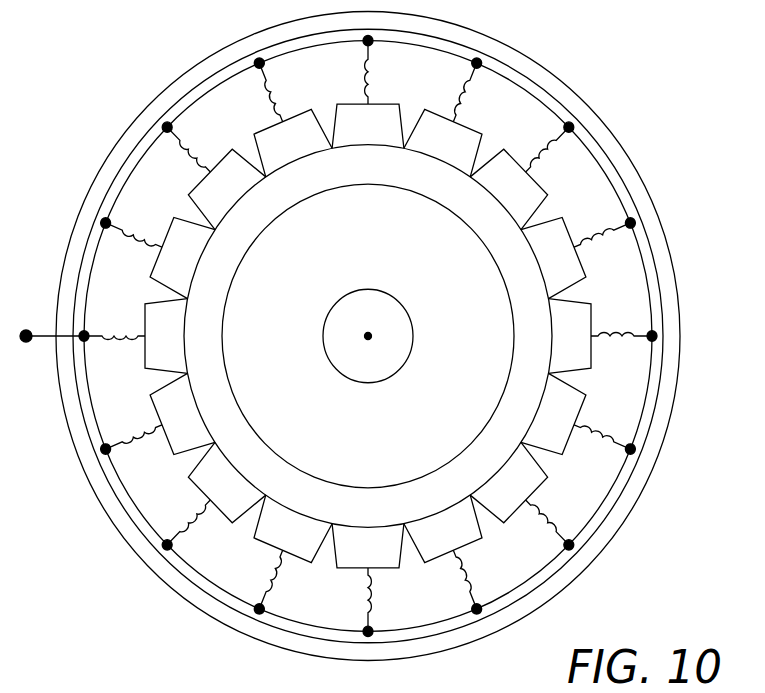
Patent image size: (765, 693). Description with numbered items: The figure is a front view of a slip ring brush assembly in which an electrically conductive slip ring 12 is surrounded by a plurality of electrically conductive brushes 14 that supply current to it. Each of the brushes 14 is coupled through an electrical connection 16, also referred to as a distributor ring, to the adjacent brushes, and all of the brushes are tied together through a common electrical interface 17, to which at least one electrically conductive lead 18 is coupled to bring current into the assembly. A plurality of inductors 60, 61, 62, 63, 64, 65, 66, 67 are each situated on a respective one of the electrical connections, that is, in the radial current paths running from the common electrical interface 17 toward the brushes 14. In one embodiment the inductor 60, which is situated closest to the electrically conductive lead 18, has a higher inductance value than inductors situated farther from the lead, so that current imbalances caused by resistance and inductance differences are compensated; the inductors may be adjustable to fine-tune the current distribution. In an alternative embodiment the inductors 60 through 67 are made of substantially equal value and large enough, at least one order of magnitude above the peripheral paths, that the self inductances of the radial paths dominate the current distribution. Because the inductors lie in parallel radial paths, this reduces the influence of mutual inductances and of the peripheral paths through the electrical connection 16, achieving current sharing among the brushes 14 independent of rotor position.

The slip ring 12 is at (463, 473).
The electrically conductive brushes 14 is at (502, 178).
The electrical connection 16 is at (572, 130).
The common electrical interface 17 is at (128, 187).
The electrically conductive lead 18 is at (42, 332).
The inductor 60 is at (124, 334).
The inductor 61 is at (142, 236).
The inductor 62 is at (200, 159).
The inductor 63 is at (286, 98).
The inductor 64 is at (372, 84).
The inductor 65 is at (480, 106).
The inductor 66 is at (546, 162).
The inductor 67 is at (590, 249).